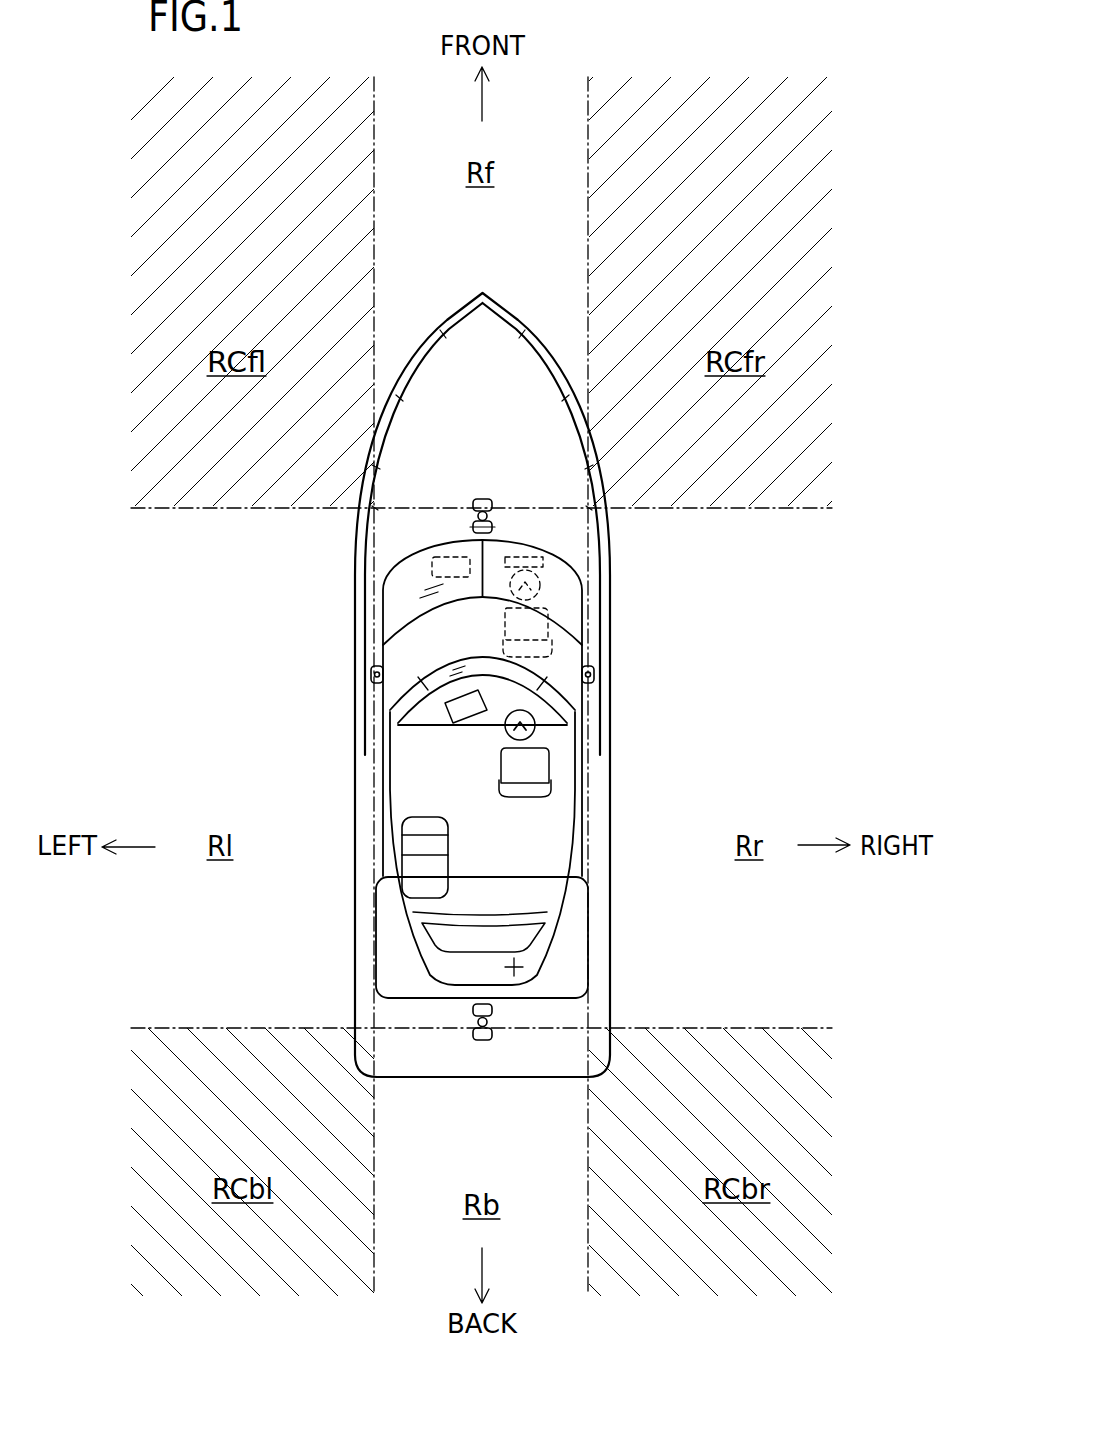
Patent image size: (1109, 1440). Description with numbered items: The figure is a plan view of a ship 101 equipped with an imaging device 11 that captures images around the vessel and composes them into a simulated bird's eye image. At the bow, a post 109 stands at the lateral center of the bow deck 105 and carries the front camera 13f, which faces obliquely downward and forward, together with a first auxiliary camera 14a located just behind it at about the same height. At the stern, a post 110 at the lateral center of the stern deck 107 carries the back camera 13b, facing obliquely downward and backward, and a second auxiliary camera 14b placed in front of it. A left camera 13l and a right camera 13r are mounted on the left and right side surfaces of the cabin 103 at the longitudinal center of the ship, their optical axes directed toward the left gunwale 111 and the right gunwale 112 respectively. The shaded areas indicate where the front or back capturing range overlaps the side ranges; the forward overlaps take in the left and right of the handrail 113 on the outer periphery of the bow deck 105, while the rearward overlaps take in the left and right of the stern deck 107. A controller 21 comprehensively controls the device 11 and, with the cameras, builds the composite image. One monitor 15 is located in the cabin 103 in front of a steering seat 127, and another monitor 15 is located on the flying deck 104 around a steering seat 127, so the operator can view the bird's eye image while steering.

The imaging device 11 is at (640, 750).
The ship 101 is at (531, 310).
The cabin 103 is at (582, 598).
The flying deck 104 is at (417, 785).
The bow deck 105 is at (503, 406).
The stern deck 107 is at (553, 1071).
The post 109 is at (470, 517).
The post 110 is at (473, 1021).
The left gunwale 111 is at (355, 590).
The right gunwale 112 is at (610, 886).
The handrail 113 is at (447, 325).
The steering seat 127 is at (505, 627).
The back camera 13b is at (483, 1042).
The front camera 13f is at (483, 498).
The left camera 13l is at (355, 673).
The right camera 13r is at (600, 673).
The first auxiliary camera 14a is at (473, 527).
The second auxiliary camera 14b is at (493, 1011).
The monitor 15 is at (527, 557).
The controller 21 is at (432, 562).